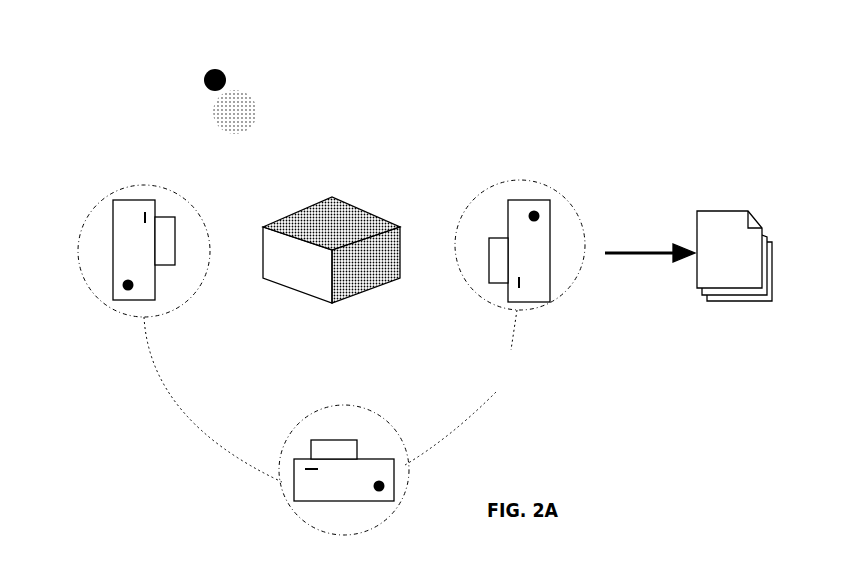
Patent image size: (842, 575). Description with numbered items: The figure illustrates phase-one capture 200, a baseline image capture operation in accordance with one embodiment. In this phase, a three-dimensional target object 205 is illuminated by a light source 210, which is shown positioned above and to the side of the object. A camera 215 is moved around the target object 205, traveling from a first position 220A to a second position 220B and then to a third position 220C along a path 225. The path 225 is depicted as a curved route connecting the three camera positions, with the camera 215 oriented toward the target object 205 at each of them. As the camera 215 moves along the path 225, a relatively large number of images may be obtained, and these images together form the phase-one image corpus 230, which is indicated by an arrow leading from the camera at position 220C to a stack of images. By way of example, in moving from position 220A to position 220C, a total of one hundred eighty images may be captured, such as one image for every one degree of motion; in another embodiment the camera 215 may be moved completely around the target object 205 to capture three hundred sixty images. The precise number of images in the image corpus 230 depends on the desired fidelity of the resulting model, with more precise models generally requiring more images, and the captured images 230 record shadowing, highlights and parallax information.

The phase-1 200 is at (465, 68).
The 3D target object 205 is at (330, 222).
The light source 210 is at (212, 72).
The camera 215 is at (154, 200).
The position 220A is at (121, 236).
The position 220B is at (292, 430).
The position 220C is at (563, 198).
The path 225 is at (330, 396).
The phase-1 image corpus 230 is at (752, 213).